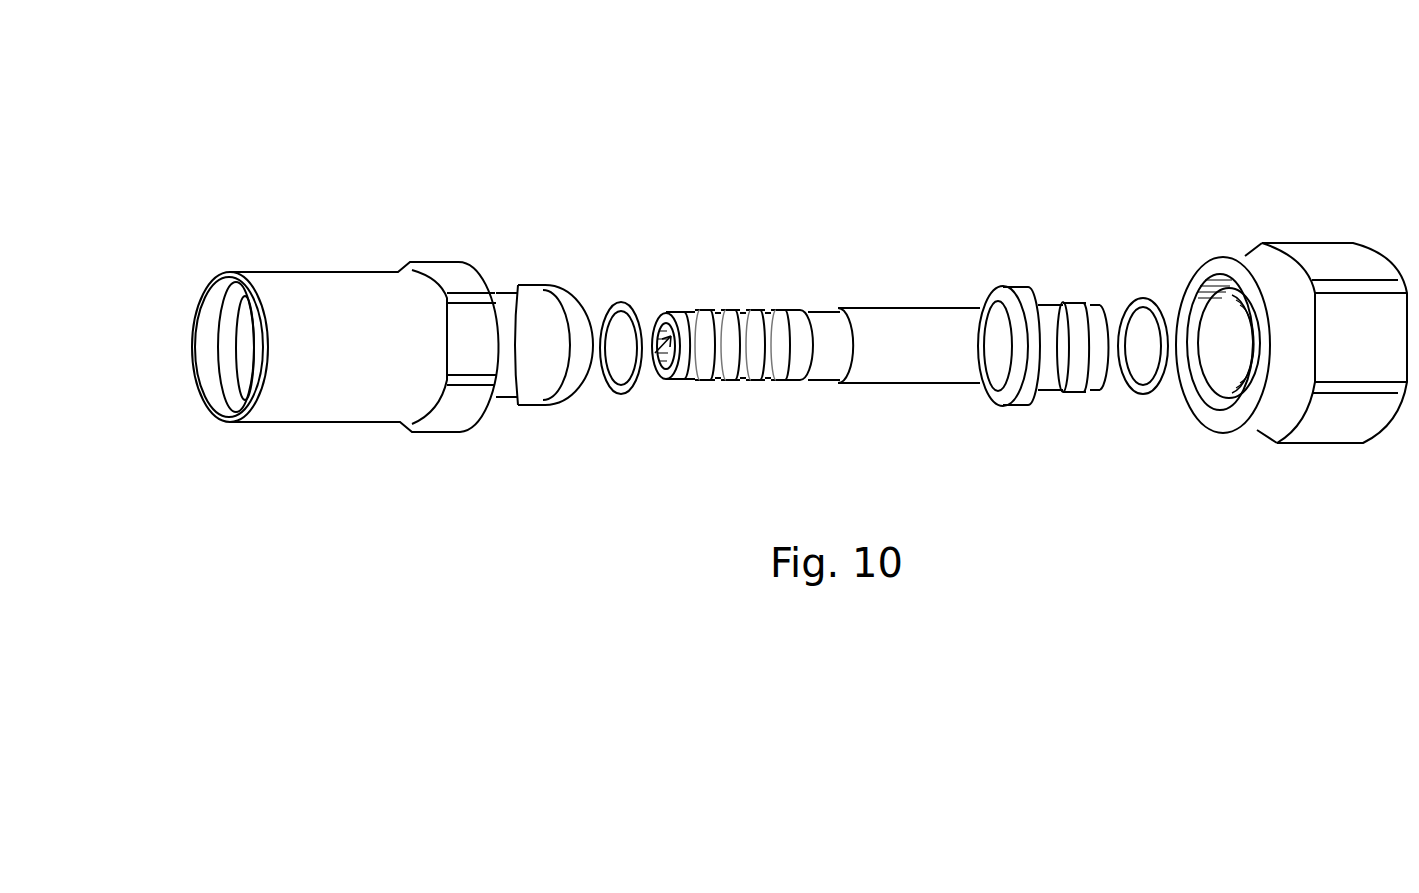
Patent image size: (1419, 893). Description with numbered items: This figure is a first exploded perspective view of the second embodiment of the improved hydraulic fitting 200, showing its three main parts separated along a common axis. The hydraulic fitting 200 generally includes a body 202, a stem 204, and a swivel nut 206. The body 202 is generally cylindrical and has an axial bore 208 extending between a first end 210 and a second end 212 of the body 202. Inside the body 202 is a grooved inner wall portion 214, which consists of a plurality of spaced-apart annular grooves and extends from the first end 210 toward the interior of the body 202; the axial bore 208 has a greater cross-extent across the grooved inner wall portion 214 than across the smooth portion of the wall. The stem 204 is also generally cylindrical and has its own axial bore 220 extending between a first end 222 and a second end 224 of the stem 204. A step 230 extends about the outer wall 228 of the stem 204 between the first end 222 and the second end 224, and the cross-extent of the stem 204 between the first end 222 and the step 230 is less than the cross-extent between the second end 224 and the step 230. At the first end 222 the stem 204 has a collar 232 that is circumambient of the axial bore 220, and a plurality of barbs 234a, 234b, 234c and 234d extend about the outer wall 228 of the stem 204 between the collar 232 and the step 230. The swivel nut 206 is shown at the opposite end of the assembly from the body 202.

The hydraulic fitting 200 is at (323, 128).
The body 202 is at (335, 422).
The stem 204 is at (902, 308).
The swivel nut 206 is at (1318, 243).
The axial bore 208 is at (226, 342).
The first end 210 is at (214, 271).
The second end 212 is at (563, 290).
The grooved inner wall portion 214 is at (230, 380).
The axial bore 220 is at (646, 376).
The first end 222 is at (660, 311).
The second end 224 is at (1080, 304).
The outer wall 228 is at (970, 343).
The step 230 is at (843, 311).
The collar 232 is at (683, 374).
The barb 234a is at (688, 312).
The barb 234b is at (717, 312).
The barb 234c is at (740, 378).
The barb 234d is at (769, 378).